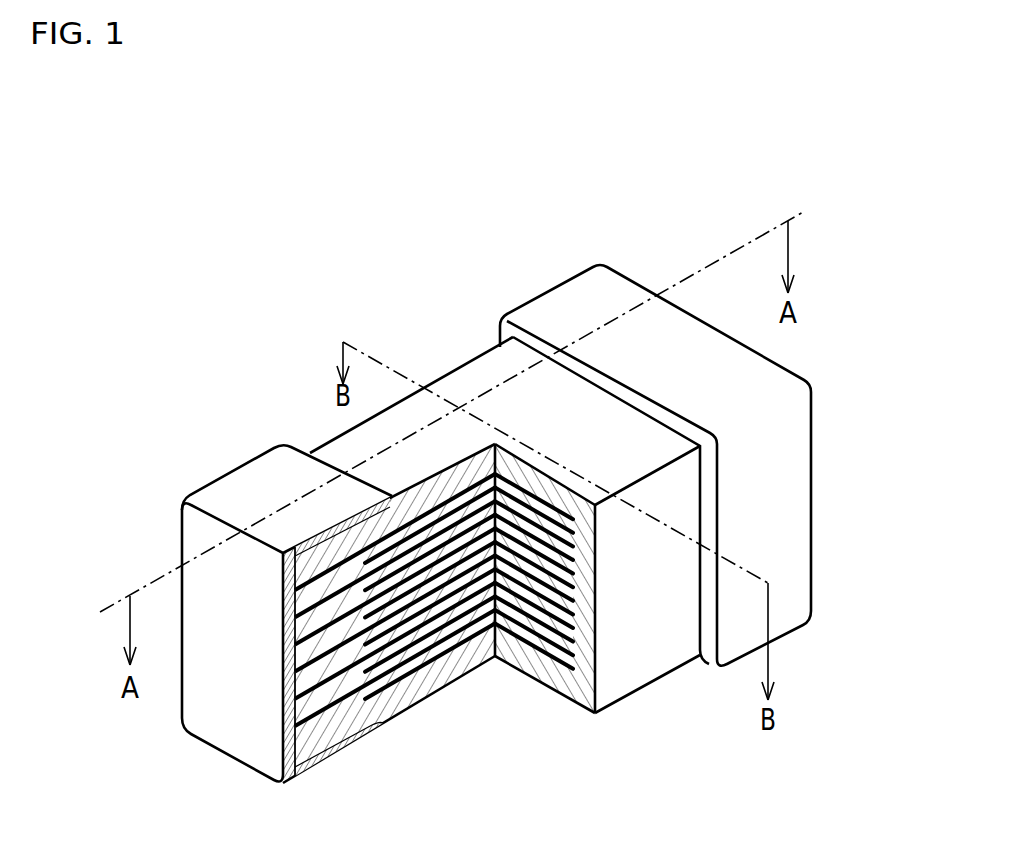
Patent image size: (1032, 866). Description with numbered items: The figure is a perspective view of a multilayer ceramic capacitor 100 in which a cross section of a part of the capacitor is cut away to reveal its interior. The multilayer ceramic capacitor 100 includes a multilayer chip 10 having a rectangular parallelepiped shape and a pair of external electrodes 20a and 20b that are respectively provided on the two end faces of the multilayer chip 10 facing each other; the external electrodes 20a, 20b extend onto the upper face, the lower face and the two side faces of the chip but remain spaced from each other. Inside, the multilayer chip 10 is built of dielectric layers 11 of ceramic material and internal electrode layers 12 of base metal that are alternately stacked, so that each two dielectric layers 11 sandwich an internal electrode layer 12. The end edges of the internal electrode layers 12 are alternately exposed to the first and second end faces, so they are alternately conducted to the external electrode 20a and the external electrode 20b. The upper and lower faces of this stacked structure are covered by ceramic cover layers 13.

The multilayer ceramic capacitor 100 is at (918, 194).
The multilayer chip 10 is at (326, 443).
The dielectric layer 11 is at (418, 647).
The internal electrode layer 12 is at (485, 654).
The cover layer 13 is at (463, 382).
The external electrode 20a is at (213, 481).
The external electrode 20b is at (555, 307).